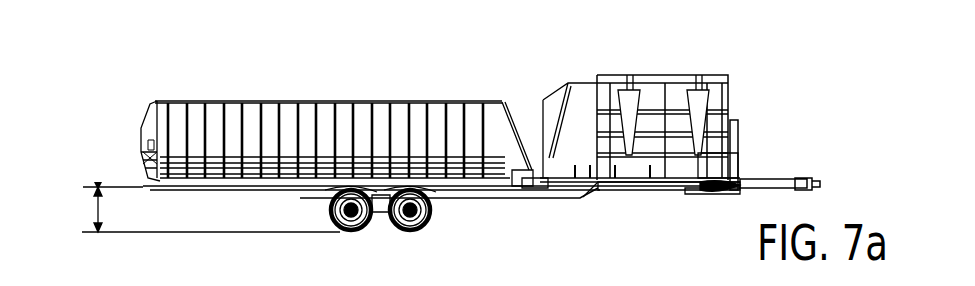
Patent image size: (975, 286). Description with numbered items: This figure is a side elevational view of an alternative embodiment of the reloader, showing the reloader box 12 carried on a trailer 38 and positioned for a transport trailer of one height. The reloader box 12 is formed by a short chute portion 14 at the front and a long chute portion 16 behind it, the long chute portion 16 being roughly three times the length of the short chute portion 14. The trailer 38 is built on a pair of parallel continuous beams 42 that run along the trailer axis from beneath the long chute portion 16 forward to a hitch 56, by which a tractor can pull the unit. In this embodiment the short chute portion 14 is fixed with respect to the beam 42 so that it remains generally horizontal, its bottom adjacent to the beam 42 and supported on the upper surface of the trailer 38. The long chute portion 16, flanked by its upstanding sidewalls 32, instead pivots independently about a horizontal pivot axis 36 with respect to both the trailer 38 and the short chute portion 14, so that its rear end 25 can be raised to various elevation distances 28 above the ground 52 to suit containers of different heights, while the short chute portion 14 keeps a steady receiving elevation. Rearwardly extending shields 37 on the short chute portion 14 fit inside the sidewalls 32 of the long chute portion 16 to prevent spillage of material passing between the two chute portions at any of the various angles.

The reloader box 12 is at (779, 41).
The short chute portion 14 is at (727, 62).
The long chute portion 16 is at (507, 62).
The rear end 25 is at (131, 72).
The elevation distance 28 is at (95, 212).
The upstanding sidewalls 32 is at (385, 116).
The horizontal pivot axis 36 is at (538, 183).
The rearwardly extending shields 37 is at (523, 133).
The trailer 38 is at (718, 201).
The continuous beams 42 is at (651, 190).
The ground 52 is at (88, 234).
The hitch 56 is at (809, 180).